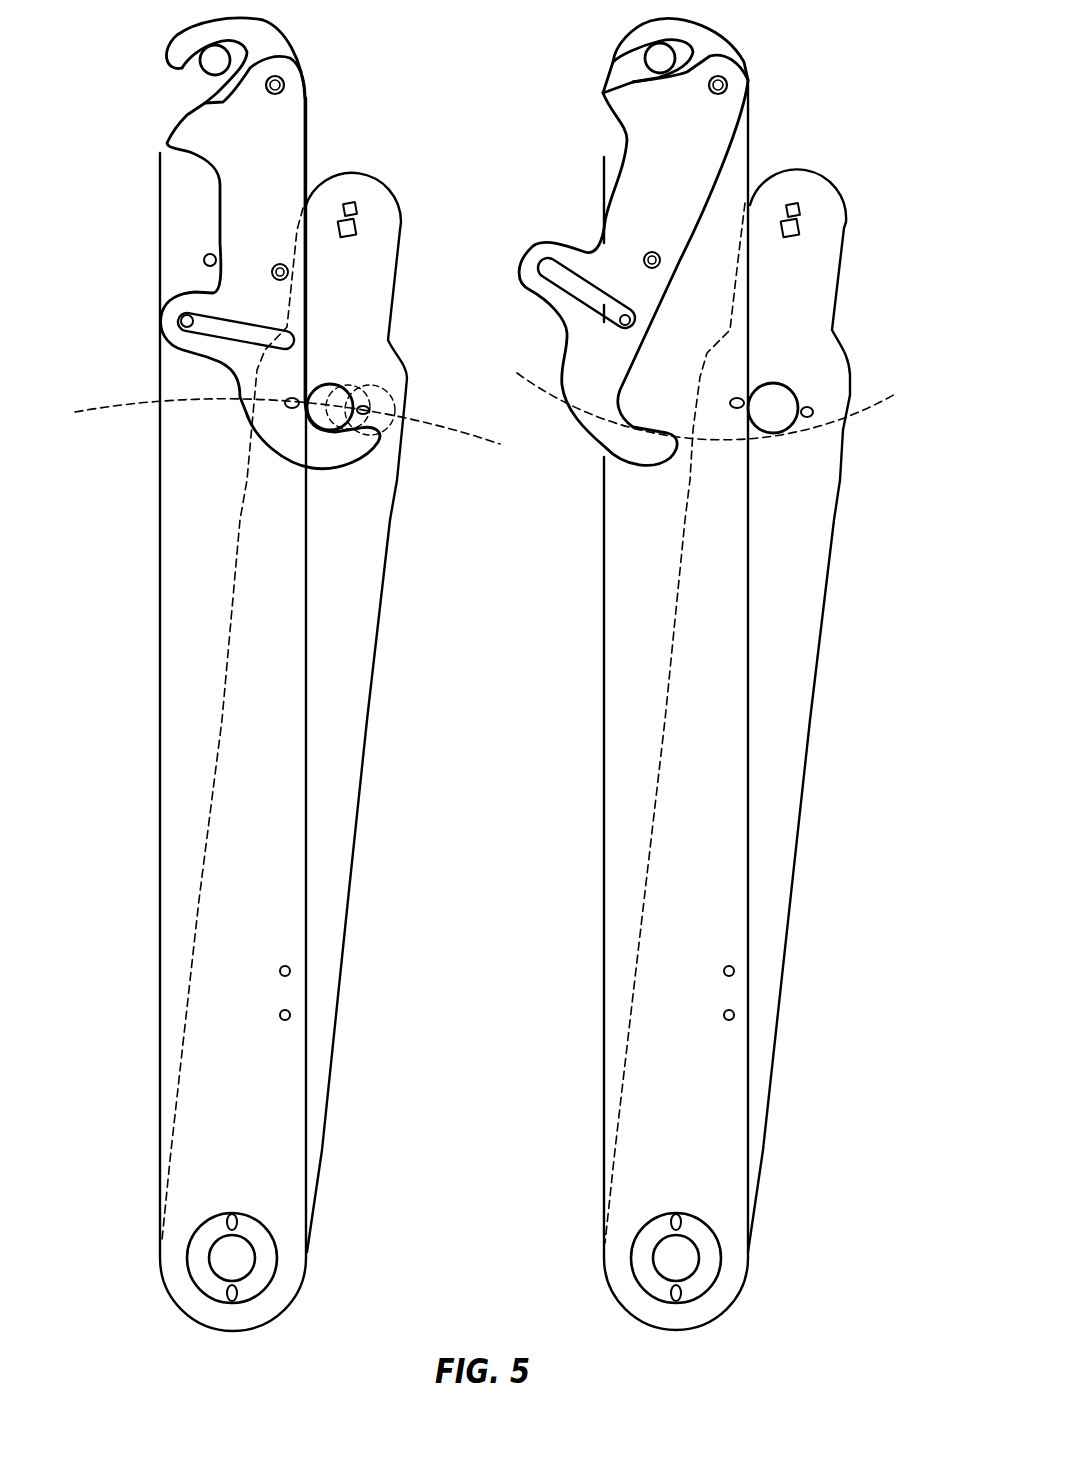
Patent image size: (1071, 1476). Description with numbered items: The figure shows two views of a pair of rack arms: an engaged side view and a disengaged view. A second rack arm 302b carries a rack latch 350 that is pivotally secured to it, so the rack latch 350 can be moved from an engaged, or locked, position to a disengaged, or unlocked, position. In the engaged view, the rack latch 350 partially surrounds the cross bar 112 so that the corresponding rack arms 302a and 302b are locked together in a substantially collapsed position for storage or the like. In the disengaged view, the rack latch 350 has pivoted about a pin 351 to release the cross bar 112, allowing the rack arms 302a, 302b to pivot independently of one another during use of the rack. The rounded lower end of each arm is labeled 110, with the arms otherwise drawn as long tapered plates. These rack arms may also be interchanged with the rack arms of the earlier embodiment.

The pivot 110 is at (242, 1260).
The cross bar 112 is at (337, 387).
The rack arm 302a is at (348, 673).
The second rack arm 302b is at (185, 565).
The rack latch 350 is at (288, 130).
The pin 351 is at (287, 83).